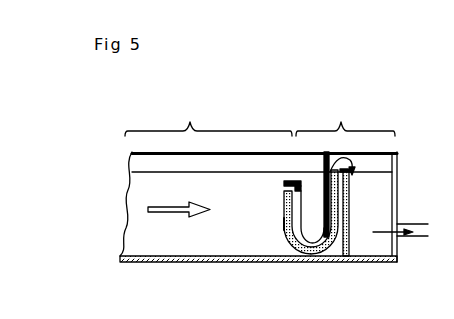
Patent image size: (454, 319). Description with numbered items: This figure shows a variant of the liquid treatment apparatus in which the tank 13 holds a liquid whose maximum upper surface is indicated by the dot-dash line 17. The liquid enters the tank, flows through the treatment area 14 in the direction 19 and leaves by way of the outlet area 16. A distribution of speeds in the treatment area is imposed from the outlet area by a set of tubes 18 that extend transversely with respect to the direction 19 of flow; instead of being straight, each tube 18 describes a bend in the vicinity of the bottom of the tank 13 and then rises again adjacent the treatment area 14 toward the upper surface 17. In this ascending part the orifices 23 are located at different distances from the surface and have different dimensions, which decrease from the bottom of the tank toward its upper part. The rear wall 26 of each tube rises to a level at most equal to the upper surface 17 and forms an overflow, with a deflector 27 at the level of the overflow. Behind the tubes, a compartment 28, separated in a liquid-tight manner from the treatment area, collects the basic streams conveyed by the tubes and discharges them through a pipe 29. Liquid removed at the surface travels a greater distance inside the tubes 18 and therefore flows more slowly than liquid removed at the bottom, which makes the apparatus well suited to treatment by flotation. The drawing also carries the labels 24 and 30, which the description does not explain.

The tank 13 is at (200, 263).
The treatment area 14 is at (190, 120).
The outlet area 16 is at (343, 118).
The upper surface of the liquid 17 is at (133, 162).
The tubes 18 is at (294, 257).
The direction of flow of the liquid 19 is at (148, 212).
The orifices 23 is at (280, 236).
The lower portion of tube leg 24 is at (280, 237).
The rear wall 26 is at (346, 234).
The deflector 27 is at (356, 162).
The compartment 28 is at (380, 181).
The pipe 29 is at (412, 240).
The tube opening 30 is at (316, 180).